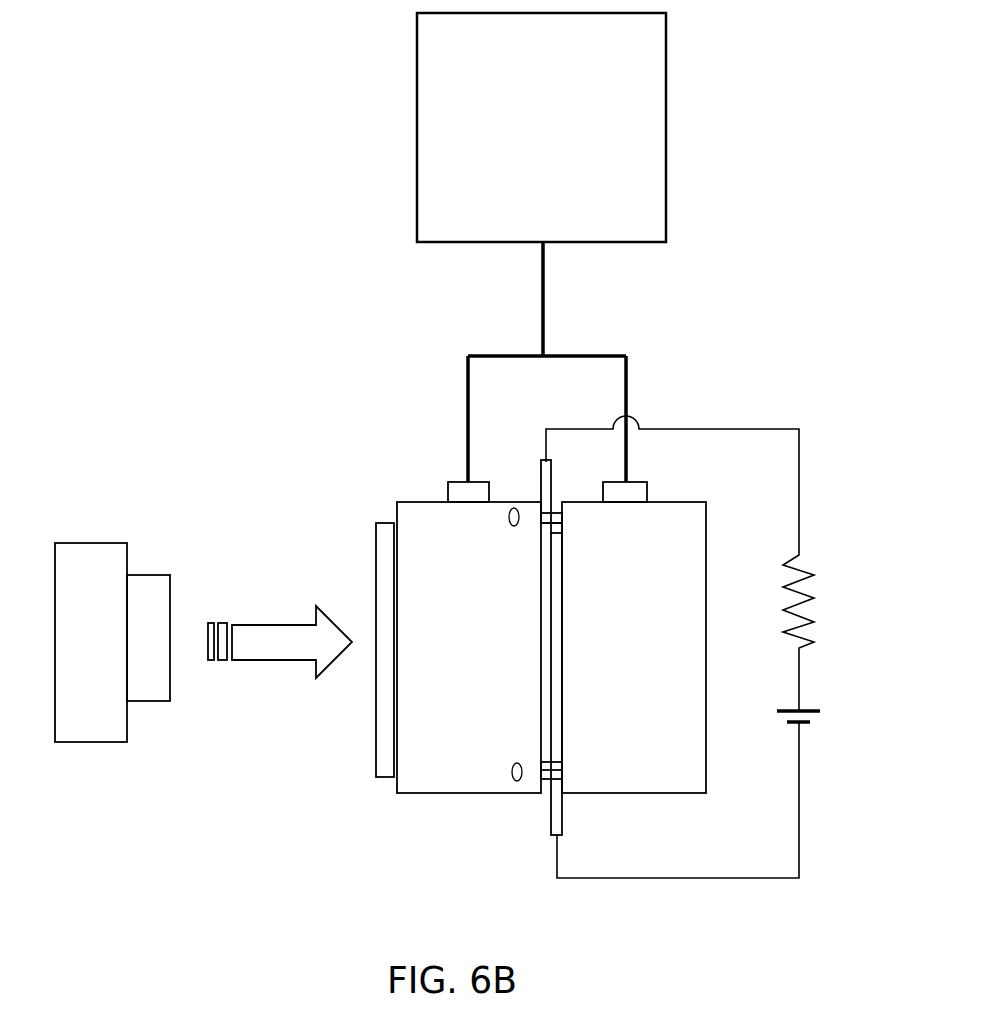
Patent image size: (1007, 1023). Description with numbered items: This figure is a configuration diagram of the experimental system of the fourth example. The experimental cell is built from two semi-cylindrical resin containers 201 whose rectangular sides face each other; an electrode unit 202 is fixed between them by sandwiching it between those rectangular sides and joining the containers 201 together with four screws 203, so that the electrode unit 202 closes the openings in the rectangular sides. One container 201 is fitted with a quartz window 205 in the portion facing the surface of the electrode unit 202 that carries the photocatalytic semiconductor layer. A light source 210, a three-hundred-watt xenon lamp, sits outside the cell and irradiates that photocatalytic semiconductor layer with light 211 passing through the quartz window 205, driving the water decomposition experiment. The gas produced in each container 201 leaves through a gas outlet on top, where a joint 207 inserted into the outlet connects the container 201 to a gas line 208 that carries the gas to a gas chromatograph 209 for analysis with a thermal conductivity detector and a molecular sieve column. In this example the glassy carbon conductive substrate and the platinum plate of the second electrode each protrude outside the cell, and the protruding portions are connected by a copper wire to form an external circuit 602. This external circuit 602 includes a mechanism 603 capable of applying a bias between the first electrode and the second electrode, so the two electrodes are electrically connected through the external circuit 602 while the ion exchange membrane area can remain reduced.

The container 201 is at (443, 775).
The electrode unit 202 is at (563, 820).
The screw 203 is at (512, 505).
The quartz window 205 is at (385, 550).
The joint 207 is at (455, 493).
The gas line 208 is at (466, 380).
The gas chromatograph 209 is at (640, 115).
The light source 210 is at (92, 565).
The light 211 is at (268, 647).
The external circuit 602 is at (750, 428).
The mechanism capable of applying a bias 603 is at (805, 725).